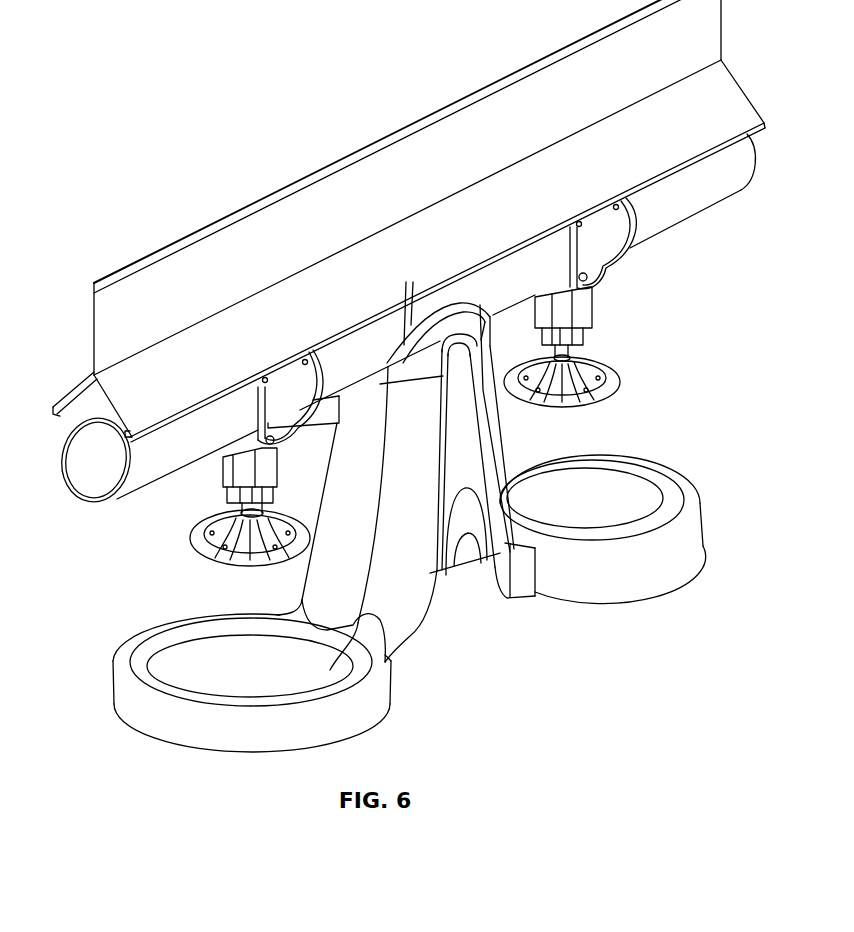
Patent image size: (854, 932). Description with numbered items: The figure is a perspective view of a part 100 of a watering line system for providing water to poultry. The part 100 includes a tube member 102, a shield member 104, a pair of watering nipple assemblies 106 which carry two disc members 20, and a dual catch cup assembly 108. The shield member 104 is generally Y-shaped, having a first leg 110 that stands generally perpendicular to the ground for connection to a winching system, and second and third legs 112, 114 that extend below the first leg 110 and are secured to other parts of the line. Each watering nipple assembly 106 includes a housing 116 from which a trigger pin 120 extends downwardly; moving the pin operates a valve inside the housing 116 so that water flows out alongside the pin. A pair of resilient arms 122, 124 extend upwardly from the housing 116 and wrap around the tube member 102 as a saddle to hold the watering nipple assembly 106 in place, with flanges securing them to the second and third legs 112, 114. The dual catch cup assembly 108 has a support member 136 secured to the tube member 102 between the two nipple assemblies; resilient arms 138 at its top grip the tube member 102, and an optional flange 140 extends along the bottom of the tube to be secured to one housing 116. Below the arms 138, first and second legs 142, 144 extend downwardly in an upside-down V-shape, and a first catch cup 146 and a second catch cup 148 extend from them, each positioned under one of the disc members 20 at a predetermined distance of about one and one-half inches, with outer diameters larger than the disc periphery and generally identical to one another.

The part of watering line system 100 is at (156, 58).
The shield member 104 is at (262, 194).
The first leg 110 is at (408, 147).
The second leg 112 is at (113, 376).
The third leg 114 is at (72, 393).
The tube member 102 is at (84, 496).
The resilient arm 122 is at (282, 378).
The resilient arm 124 is at (597, 227).
The watering nipple assembly 106 is at (221, 470).
The housing 116 is at (233, 490).
The trigger pin 120 is at (280, 503).
The disc member 20 is at (190, 538).
The dual catch cup assembly 108 is at (432, 610).
The support member 136 is at (473, 296).
The resilient arms 138 is at (437, 301).
The flange 140 is at (313, 432).
The first leg 142 is at (395, 642).
The second leg 144 is at (492, 565).
The first catch cup 146 is at (122, 680).
The second catch cup 148 is at (668, 560).